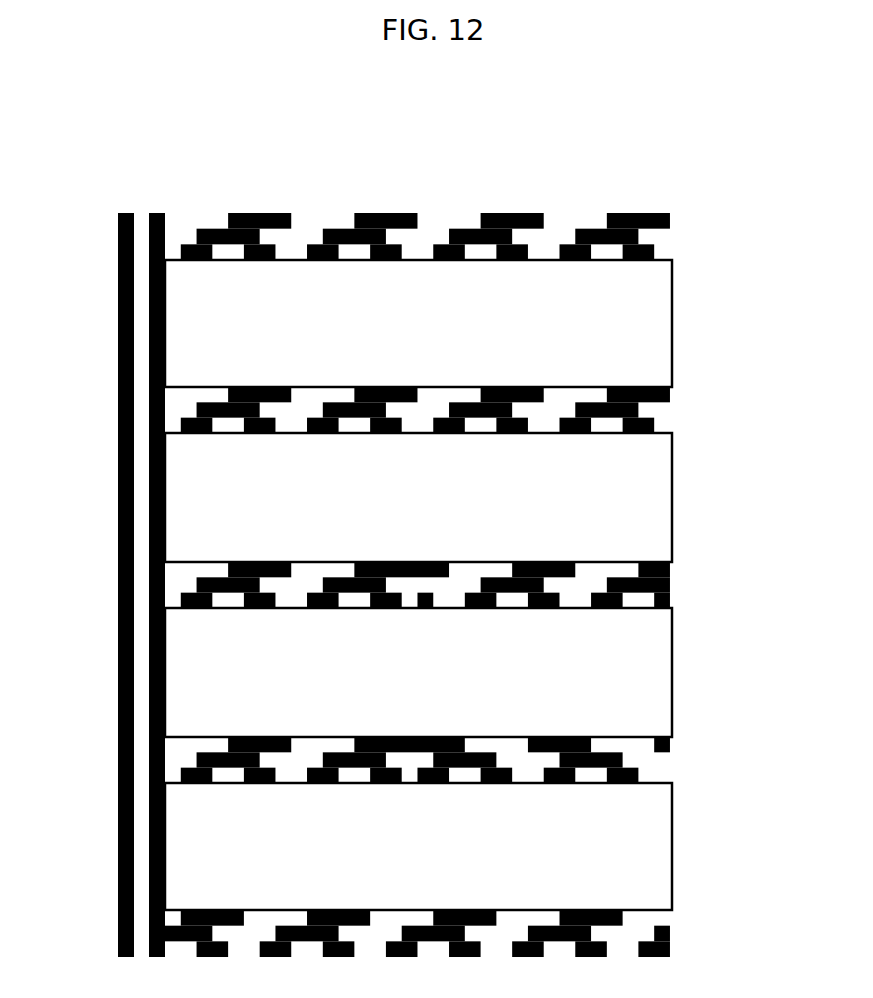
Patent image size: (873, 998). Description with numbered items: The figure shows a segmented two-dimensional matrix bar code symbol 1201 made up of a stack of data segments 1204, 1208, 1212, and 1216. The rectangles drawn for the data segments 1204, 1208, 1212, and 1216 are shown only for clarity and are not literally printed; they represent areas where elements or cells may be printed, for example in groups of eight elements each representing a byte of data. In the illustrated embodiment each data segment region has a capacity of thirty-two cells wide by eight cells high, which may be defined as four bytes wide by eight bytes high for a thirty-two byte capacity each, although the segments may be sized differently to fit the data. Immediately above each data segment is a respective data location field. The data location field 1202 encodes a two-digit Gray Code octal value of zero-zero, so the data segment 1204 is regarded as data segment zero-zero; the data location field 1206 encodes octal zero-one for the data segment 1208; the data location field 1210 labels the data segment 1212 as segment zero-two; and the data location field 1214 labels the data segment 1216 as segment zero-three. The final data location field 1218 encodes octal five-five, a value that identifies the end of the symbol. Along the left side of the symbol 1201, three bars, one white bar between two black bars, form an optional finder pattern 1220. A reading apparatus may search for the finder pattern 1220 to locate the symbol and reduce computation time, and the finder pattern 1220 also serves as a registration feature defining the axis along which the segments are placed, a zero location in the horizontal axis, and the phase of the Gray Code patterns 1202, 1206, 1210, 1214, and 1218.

The segmented bar code symbol 1201 is at (580, 159).
The data location field 1202 is at (673, 238).
The data segment 1204 is at (687, 260).
The data location field 1206 is at (673, 411).
The data segment 1208 is at (687, 433).
The data location field 1210 is at (673, 586).
The data segment 1212 is at (687, 608).
The data location field 1214 is at (673, 761).
The data segment 1216 is at (687, 783).
The data location field 1218 is at (673, 936).
The finder pattern 1220 is at (117, 587).